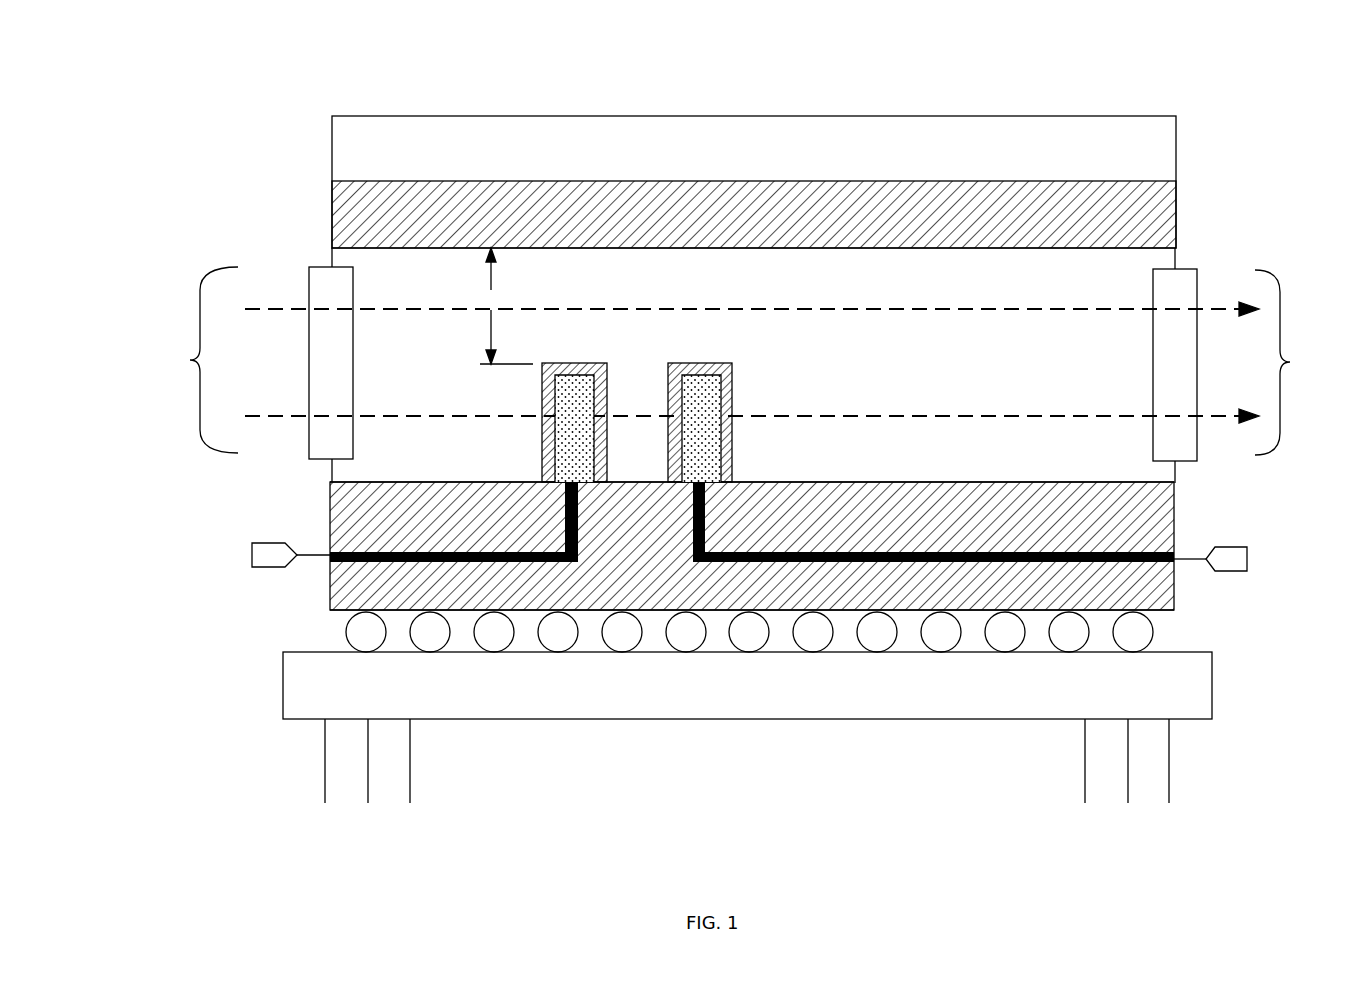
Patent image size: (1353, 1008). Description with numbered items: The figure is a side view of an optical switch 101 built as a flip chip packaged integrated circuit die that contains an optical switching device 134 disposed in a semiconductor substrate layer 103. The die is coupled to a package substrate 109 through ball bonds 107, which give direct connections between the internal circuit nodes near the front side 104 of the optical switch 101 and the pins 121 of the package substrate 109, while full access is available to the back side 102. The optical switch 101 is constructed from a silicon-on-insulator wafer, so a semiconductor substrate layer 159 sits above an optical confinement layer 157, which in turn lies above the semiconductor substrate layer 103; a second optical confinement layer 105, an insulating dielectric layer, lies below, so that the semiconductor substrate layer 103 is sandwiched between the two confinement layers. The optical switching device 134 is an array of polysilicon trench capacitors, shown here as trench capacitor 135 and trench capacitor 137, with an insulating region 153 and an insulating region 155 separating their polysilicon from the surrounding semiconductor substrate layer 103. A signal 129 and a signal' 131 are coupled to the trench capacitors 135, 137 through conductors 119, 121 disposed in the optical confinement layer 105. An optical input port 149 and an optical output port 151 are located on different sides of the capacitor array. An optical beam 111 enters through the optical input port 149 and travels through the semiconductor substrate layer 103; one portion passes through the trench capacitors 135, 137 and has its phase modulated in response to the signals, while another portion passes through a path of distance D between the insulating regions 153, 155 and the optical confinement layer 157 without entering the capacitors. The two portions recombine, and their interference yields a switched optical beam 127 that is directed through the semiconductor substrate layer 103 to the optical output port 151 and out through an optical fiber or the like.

The optical switch 101 is at (1222, 90).
The back side 102 is at (790, 155).
The semiconductor substrate layer 159 is at (1166, 157).
The optical confinement layer 157 is at (1166, 205).
The optical input port 149 is at (322, 267).
The optical output port 151 is at (1186, 269).
The optical beam 111 is at (699, 360).
The switched optical beam 127 is at (1294, 362).
The insulating region 153 is at (604, 408).
The insulating region 155 is at (729, 408).
The trench capacitor 135 is at (586, 404).
The trench capacitor 137 is at (717, 404).
The optical switching device 134 is at (701, 408).
The semiconductor substrate layer 103 is at (1176, 468).
The optical confinement layer 105 is at (1172, 535).
The front side 104 is at (1165, 614).
The conductor 119 is at (556, 505).
The conductor / pins 121 is at (704, 504).
The ball bonds 107 is at (812, 645).
The package substrate 109 is at (1212, 690).
The signal 129 is at (210, 536).
The signal' 131 is at (1278, 546).